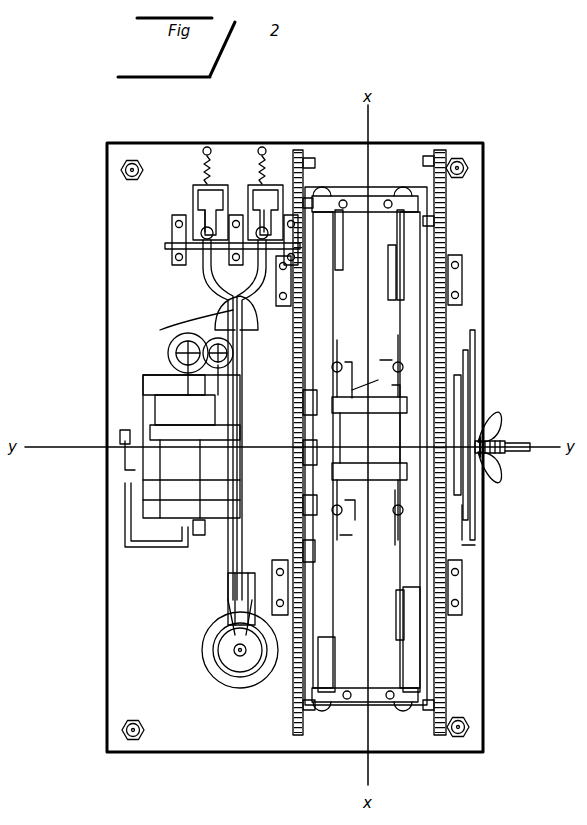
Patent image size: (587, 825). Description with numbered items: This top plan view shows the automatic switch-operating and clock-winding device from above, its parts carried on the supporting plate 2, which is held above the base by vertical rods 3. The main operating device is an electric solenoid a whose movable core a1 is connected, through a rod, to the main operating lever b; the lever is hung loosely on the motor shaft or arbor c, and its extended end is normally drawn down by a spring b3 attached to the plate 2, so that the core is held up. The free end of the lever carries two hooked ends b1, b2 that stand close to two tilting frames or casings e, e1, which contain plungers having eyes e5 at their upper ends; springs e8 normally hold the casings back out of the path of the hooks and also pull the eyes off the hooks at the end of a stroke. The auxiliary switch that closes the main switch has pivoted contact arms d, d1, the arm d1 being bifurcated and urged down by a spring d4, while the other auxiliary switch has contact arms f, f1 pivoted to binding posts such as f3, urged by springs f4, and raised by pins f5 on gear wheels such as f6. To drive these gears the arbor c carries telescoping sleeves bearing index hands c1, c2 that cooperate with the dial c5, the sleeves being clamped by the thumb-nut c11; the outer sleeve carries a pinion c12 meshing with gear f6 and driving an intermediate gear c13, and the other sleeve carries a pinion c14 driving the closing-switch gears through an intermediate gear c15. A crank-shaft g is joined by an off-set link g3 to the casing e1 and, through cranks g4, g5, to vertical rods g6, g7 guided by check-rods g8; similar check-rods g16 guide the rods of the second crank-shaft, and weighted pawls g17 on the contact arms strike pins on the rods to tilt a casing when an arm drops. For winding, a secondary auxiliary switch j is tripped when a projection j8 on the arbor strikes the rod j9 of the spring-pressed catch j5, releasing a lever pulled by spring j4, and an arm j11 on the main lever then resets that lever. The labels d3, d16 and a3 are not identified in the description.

The supporting plate 2 is at (490, 673).
The vertical rods 3 is at (121, 732).
The left rack bar d3 is at (315, 160).
The pins f5 is at (428, 156).
The movable contact d is at (333, 600).
The spring d4 is at (335, 670).
The movable contact d1 is at (350, 440).
The frame stop d16 is at (303, 550).
The binding post f3 is at (405, 268).
The springs f4 is at (400, 615).
The contact arm f is at (372, 385).
The contact arm f1 is at (520, 288).
The gear wheel f6 is at (462, 540).
The crank-shaft g is at (475, 550).
The off-set link g3 is at (348, 495).
The crank g4 is at (348, 540).
The crank g5 is at (398, 350).
The vertically extending rod g6 is at (308, 501).
The vertically extending rod g7 is at (348, 362).
The check-rods g8 is at (380, 360).
The check-rods g16 is at (395, 400).
The weighted pawl g17 is at (355, 520).
The tilting frame e is at (258, 185).
The tilting frame e1 is at (193, 200).
The eyes e5 is at (207, 225).
The springs e8 is at (212, 150).
The main operating lever b is at (205, 300).
The hooked end b1 is at (190, 249).
The hooked end b2 is at (201, 236).
The spring b3 is at (189, 327).
The secondary auxiliary switch j is at (180, 441).
The spring j4 is at (168, 353).
The spring-pressed catch j5 is at (199, 535).
The projection j8 is at (125, 470).
The projecting rod j9 is at (160, 547).
The projecting arm j11 is at (228, 600).
The solenoid a is at (218, 642).
The movable core a1 is at (225, 657).
The wheel hub a3 is at (240, 656).
The motor shaft c is at (505, 440).
The index hand c1 is at (476, 400).
The thumb-nut c11 is at (475, 480).
The index hand c2 is at (468, 490).
The dial c5 is at (461, 480).
The pinion c12 is at (495, 425).
The intermediate pinion c13 is at (482, 425).
The pinion c14 is at (303, 455).
The intermediate pinion c15 is at (303, 395).